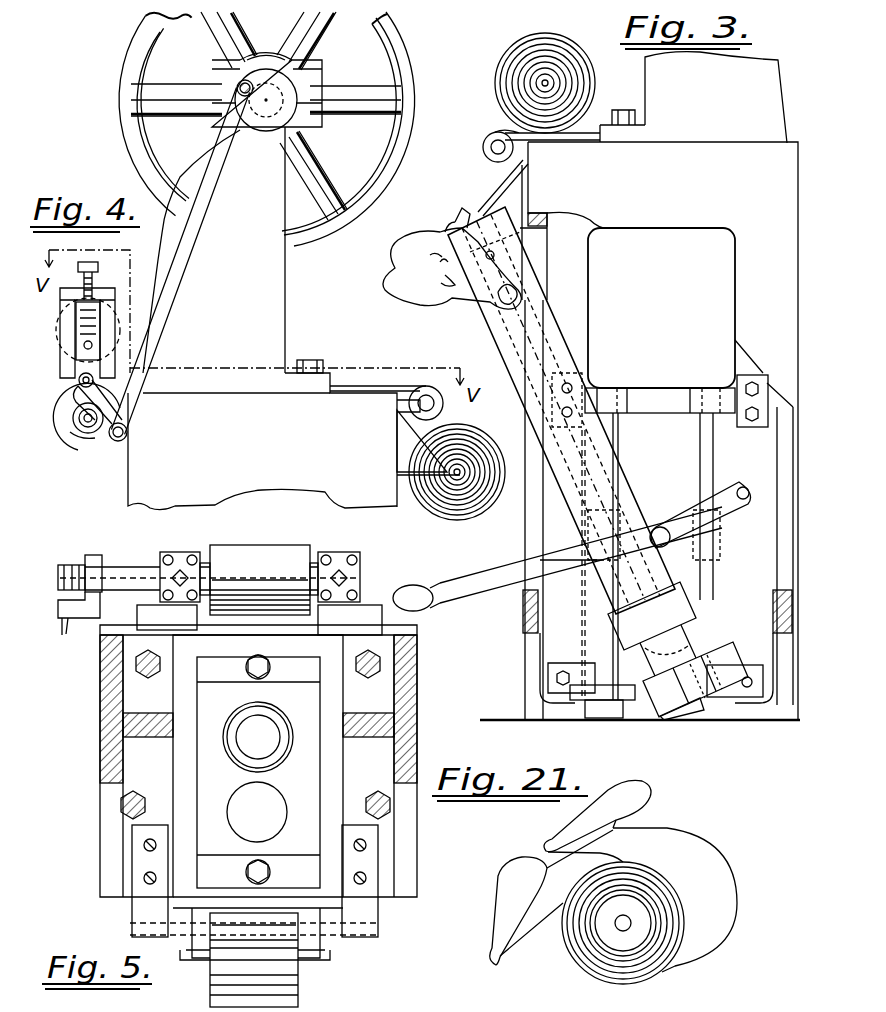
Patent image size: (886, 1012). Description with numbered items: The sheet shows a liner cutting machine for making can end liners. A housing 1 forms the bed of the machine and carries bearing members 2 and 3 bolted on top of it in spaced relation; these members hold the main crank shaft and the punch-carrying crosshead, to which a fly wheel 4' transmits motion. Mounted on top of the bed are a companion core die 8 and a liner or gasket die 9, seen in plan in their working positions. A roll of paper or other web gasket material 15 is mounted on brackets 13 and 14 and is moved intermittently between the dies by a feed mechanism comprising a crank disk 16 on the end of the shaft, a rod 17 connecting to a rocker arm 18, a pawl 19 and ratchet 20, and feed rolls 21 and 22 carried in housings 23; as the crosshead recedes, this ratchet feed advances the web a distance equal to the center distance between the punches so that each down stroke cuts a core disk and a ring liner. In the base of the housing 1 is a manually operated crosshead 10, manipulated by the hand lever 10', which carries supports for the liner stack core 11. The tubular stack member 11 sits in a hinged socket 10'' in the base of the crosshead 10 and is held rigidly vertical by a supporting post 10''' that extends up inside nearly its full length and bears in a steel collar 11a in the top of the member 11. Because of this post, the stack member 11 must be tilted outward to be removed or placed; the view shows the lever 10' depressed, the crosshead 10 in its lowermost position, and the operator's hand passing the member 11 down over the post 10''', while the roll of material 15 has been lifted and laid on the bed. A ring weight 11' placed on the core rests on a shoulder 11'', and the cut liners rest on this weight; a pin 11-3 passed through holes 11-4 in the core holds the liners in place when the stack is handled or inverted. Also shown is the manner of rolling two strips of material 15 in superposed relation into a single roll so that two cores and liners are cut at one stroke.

In FIG. 4, the housing 1 is at (262, 435).
In FIG. 3, the housing 1 is at (640, 431).
In FIG. 5, the housing 1 is at (258, 781).
In FIG. 3, the bearing member 2 is at (693, 97).
In FIG. 4, the bearing member 3 is at (214, 250).
In FIG. 4, the fly wheel 4' is at (250, 129).
In FIG. 5, the core die 8 is at (250, 822).
In FIG. 5, the liner die 9 is at (238, 762).
In FIG. 3, the manually operated crosshead 10 is at (699, 515).
In FIG. 3, the hand lever 10' is at (557, 560).
In FIG. 3, the hinged socket 10'' is at (667, 722).
In FIG. 3, the supporting post 10''' is at (645, 679).
In FIG. 3, the liner stack member 11 is at (561, 410).
In FIG. 3, the ring weight 11' is at (622, 616).
In FIG. 5, the ring weight 11' is at (266, 730).
In FIG. 3, the shoulder 11'' is at (622, 646).
In FIG. 3, the steel collar 11a is at (454, 229).
In FIG. 3, the pin 11-3 is at (500, 240).
In FIG. 3, the holes 11-4 is at (496, 256).
In FIG. 4, the bracket 13 is at (405, 500).
In FIG. 5, the bracket 13 is at (192, 950).
In FIG. 3, the bracket 14 is at (490, 198).
In FIG. 5, the bracket 14 is at (322, 946).
In FIG. 4, the web gasket material 15 is at (355, 382).
In FIG. 3, the web gasket material 15 is at (508, 58).
In FIG. 5, the web gasket material 15 is at (300, 983).
In FIG. 21, the web gasket material 15 is at (615, 882).
In FIG. 4, the crank disk 16 is at (271, 127).
In FIG. 4, the rod 17 is at (212, 190).
In FIG. 4, the rocker arm 18 is at (113, 442).
In FIG. 4, the pawl 19 is at (78, 380).
In FIG. 4, the ratchet 20 is at (70, 440).
In FIG. 4, the feed roll 21 is at (84, 450).
In FIG. 4, the feed roll 22 is at (118, 347).
In FIG. 5, the feed roll 22 is at (278, 530).
In FIG. 4, the housings 23 is at (105, 325).
In FIG. 5, the housings 23 is at (128, 567).